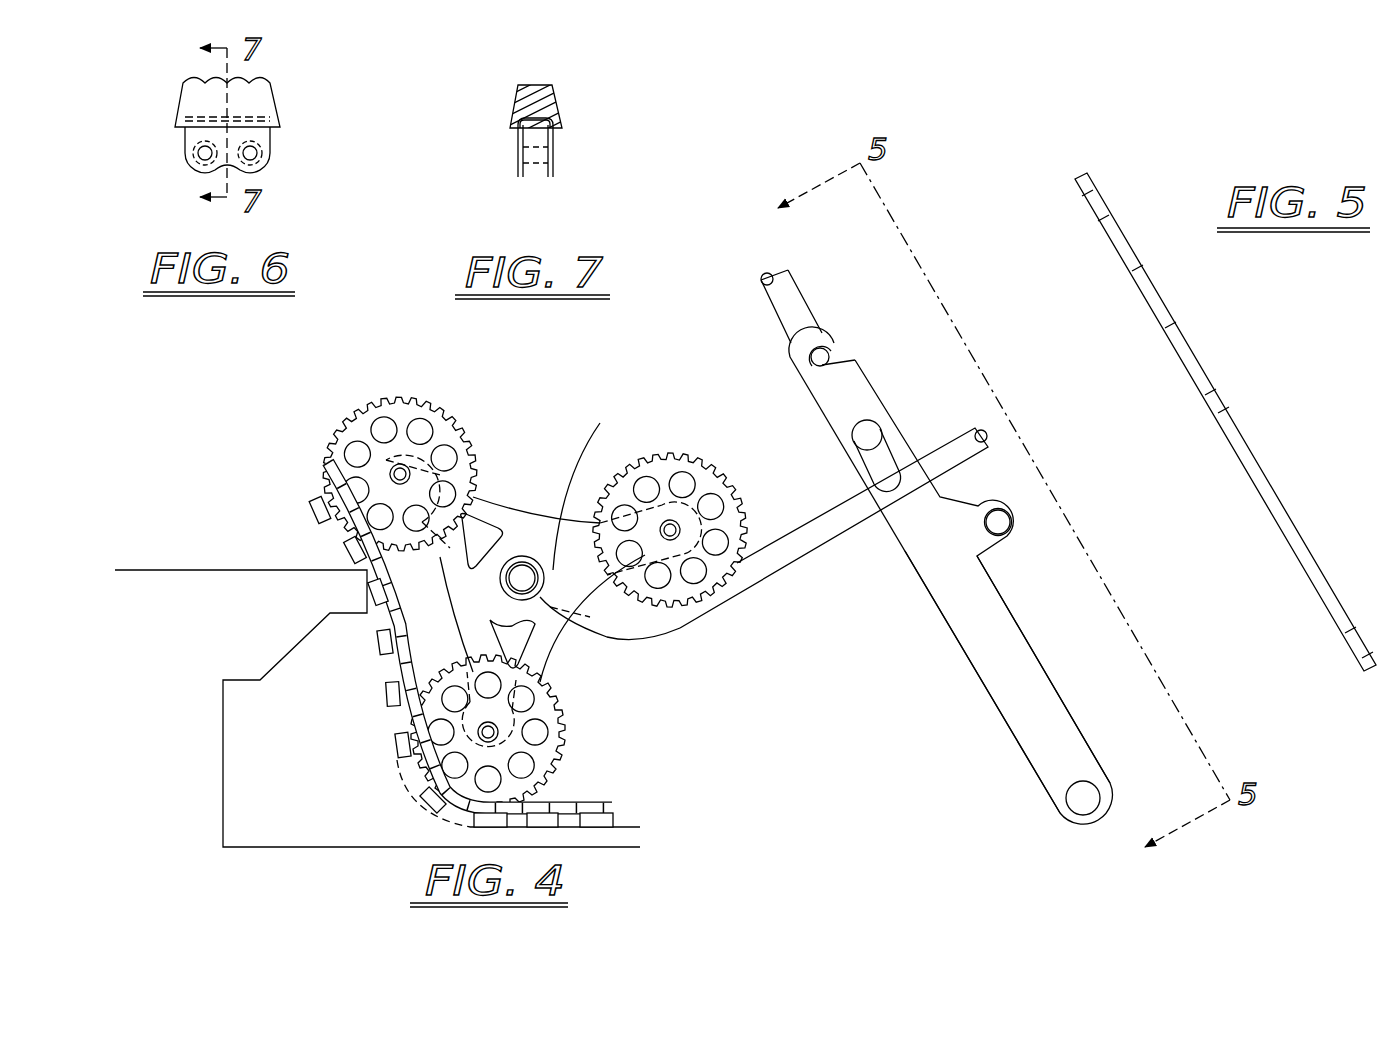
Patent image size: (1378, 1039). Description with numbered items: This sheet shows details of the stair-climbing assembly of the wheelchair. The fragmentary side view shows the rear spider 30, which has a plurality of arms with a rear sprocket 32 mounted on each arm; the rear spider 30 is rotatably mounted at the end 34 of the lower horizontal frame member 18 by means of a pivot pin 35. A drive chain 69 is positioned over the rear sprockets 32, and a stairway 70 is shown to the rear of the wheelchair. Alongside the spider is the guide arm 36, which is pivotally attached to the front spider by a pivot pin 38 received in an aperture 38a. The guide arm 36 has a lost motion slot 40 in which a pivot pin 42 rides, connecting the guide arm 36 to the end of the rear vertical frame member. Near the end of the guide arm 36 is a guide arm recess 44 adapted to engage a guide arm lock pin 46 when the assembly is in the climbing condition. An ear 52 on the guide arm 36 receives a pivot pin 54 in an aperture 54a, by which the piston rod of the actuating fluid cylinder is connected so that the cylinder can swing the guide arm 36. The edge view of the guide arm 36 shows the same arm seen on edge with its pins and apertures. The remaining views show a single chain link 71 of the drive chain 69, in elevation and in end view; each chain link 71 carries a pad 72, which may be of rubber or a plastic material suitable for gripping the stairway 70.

In FIG. 4, the lower horizontal frame member 18 is at (703, 613).
In FIG. 4, the rear spider 30 is at (552, 645).
In FIG. 4, the rear sprocket 32 is at (463, 430).
In FIG. 4, the end of lower horizontal frame member 34 is at (600, 428).
In FIG. 4, the pivot pin 35 is at (521, 556).
In FIG. 4, the guide arm 36 is at (1033, 657).
In FIG. 5, the guide arm 36 is at (1275, 490).
In FIG. 4, the pivot pin 38 is at (1073, 810).
In FIG. 5, the aperture 38a is at (1353, 645).
In FIG. 4, the lost motion slot 40 is at (892, 450).
In FIG. 5, the lost motion slot 40 is at (1148, 302).
In FIG. 4, the pivot pin 42 is at (870, 423).
In FIG. 4, the guide arm recess 44 is at (858, 348).
In FIG. 5, the guide arm recess 44 is at (1125, 190).
In FIG. 4, the guide arm lock pin 46 is at (832, 348).
In FIG. 4, the ear 52 is at (967, 500).
In FIG. 5, the ear 52 is at (1193, 352).
In FIG. 4, the pivot pin 54 is at (1003, 535).
In FIG. 5, the aperture 54a is at (1210, 407).
In FIG. 4, the drive chain 69 is at (398, 665).
In FIG. 4, the stairway 70 is at (165, 570).
In FIG. 6, the chain link 71 is at (187, 160).
In FIG. 7, the chain link 71 is at (557, 167).
In FIG. 6, the pad 72 is at (273, 97).
In FIG. 7, the pad 72 is at (555, 103).